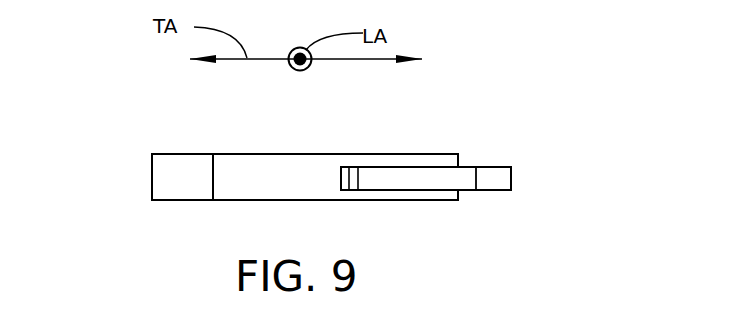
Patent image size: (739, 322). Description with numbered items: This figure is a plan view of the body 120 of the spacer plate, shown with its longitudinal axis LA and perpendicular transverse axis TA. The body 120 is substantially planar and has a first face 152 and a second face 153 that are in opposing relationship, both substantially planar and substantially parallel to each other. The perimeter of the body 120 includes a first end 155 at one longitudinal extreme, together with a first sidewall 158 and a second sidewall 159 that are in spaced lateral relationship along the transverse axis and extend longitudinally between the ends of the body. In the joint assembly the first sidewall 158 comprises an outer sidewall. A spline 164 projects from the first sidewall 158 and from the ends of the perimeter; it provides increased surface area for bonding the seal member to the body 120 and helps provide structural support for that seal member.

The body 120 is at (325, 165).
The first face 152 is at (357, 212).
The second face 153 is at (278, 138).
The first end 155 is at (270, 183).
The first sidewall 158 is at (458, 195).
The second sidewall 159 is at (180, 193).
The spline 164 is at (492, 175).